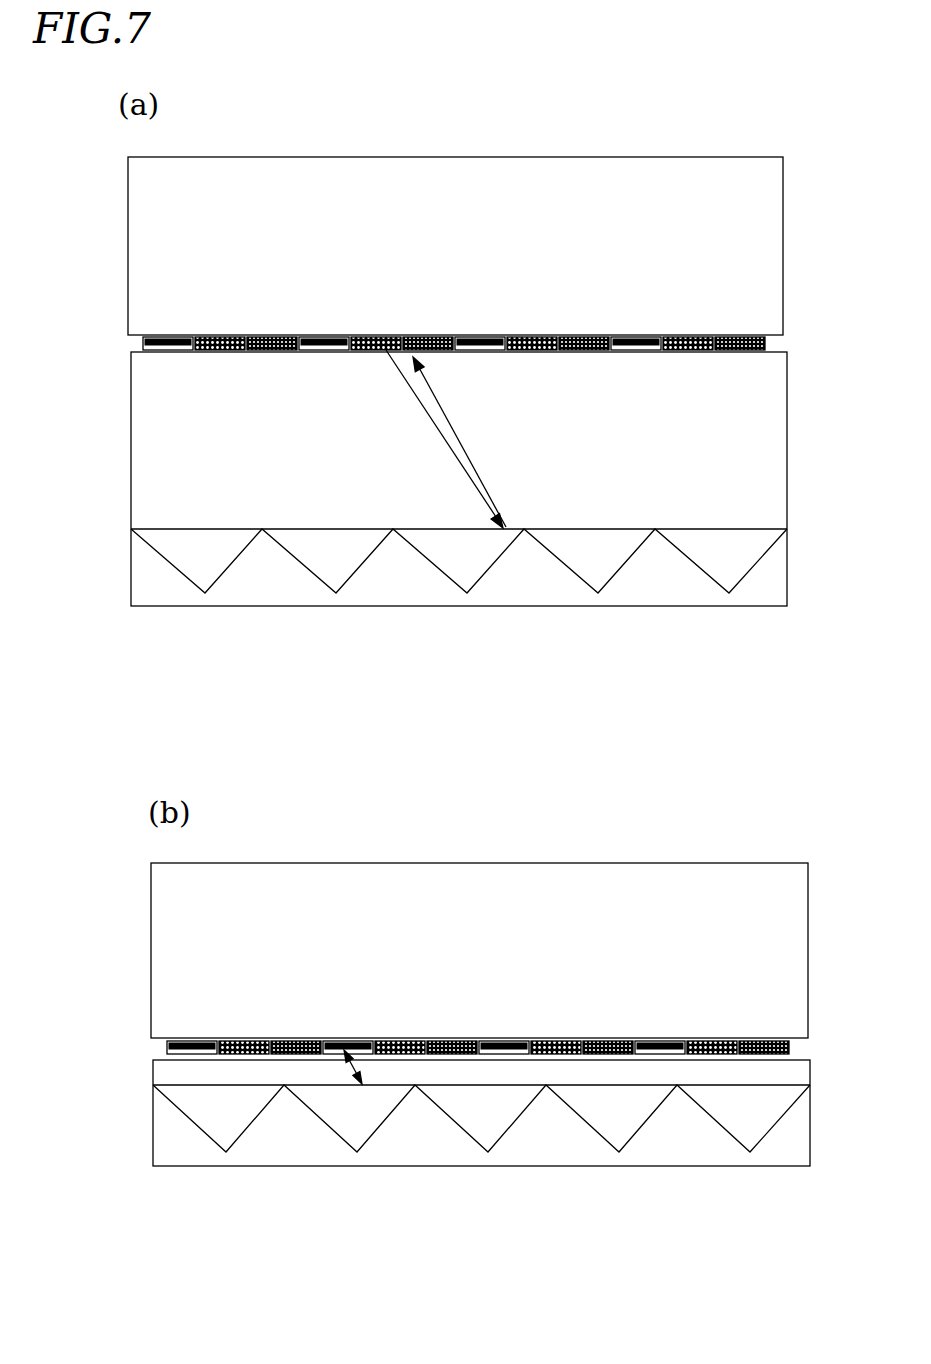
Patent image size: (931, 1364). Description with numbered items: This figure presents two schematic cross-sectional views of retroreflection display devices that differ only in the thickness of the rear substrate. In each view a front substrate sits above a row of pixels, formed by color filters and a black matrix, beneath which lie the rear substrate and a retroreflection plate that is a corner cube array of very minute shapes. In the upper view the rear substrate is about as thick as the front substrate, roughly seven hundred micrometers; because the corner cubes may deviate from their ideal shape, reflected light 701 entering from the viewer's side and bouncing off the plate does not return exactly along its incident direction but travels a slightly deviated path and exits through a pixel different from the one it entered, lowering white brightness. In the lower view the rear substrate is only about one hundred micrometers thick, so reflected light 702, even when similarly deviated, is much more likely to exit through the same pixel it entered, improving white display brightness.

The reflected light 701 is at (456, 462).
The reflected light 702 is at (350, 1068).